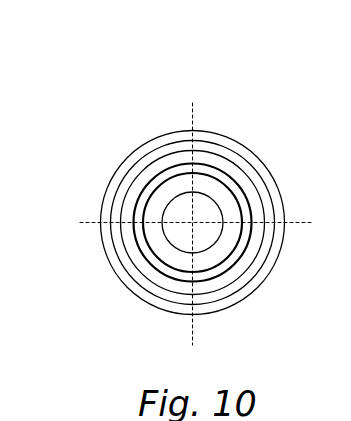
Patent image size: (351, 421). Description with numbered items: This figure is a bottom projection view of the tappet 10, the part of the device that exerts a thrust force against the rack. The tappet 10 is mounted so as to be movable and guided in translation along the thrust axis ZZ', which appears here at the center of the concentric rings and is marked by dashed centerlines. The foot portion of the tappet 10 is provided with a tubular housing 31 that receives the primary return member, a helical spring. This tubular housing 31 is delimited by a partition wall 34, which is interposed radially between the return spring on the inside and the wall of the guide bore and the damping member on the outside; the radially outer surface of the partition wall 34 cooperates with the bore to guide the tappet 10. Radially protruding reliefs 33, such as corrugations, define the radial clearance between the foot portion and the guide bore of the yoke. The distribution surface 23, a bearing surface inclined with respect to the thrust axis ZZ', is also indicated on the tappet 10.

The tappet 10 is at (128, 135).
The distribution surface 23 is at (227, 170).
The tubular housing 31 is at (207, 183).
The radially protruding reliefs 33 is at (240, 270).
The partition wall 34 is at (243, 250).
The thrust axis ZZ' is at (188, 224).